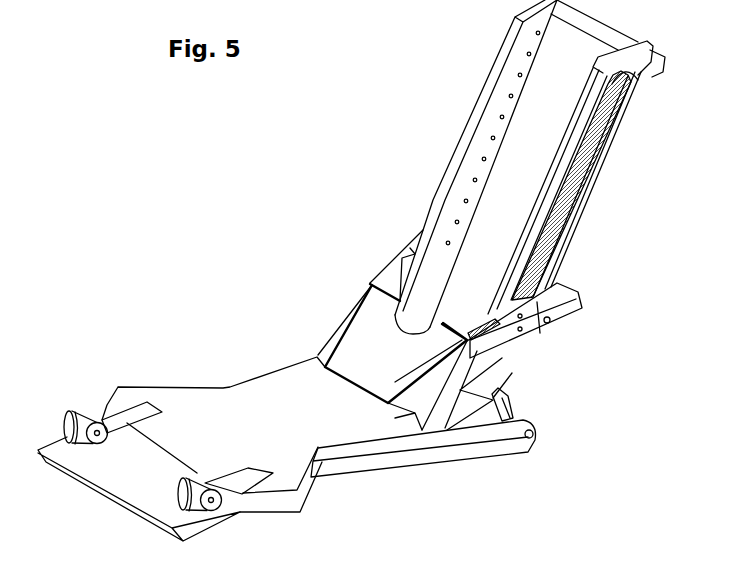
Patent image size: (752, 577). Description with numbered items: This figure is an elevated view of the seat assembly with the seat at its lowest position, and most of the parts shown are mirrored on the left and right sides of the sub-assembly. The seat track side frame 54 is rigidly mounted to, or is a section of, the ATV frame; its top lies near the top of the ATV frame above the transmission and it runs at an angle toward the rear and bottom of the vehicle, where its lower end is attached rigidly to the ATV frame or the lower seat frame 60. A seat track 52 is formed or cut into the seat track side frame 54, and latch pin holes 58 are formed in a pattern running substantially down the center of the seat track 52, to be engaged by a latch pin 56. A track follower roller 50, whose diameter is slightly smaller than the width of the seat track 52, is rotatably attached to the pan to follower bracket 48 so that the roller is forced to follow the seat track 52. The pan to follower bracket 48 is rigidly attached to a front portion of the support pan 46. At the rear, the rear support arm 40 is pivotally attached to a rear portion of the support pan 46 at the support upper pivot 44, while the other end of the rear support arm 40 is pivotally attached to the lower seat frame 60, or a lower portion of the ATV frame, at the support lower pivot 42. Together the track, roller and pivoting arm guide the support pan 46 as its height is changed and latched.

The rear support arm 40 is at (398, 457).
The support lower pivot 42 is at (532, 438).
The support upper pivot 44 is at (212, 500).
The support pan 46 is at (258, 412).
The pan to follower bracket 48 is at (563, 310).
The track follower roller 50 is at (537, 287).
The seat track 52 is at (580, 157).
The seat track side frame 54 is at (462, 143).
The latch pin 56 is at (442, 262).
The latch pin holes 58 is at (495, 117).
The lower seat frame 60 is at (507, 407).